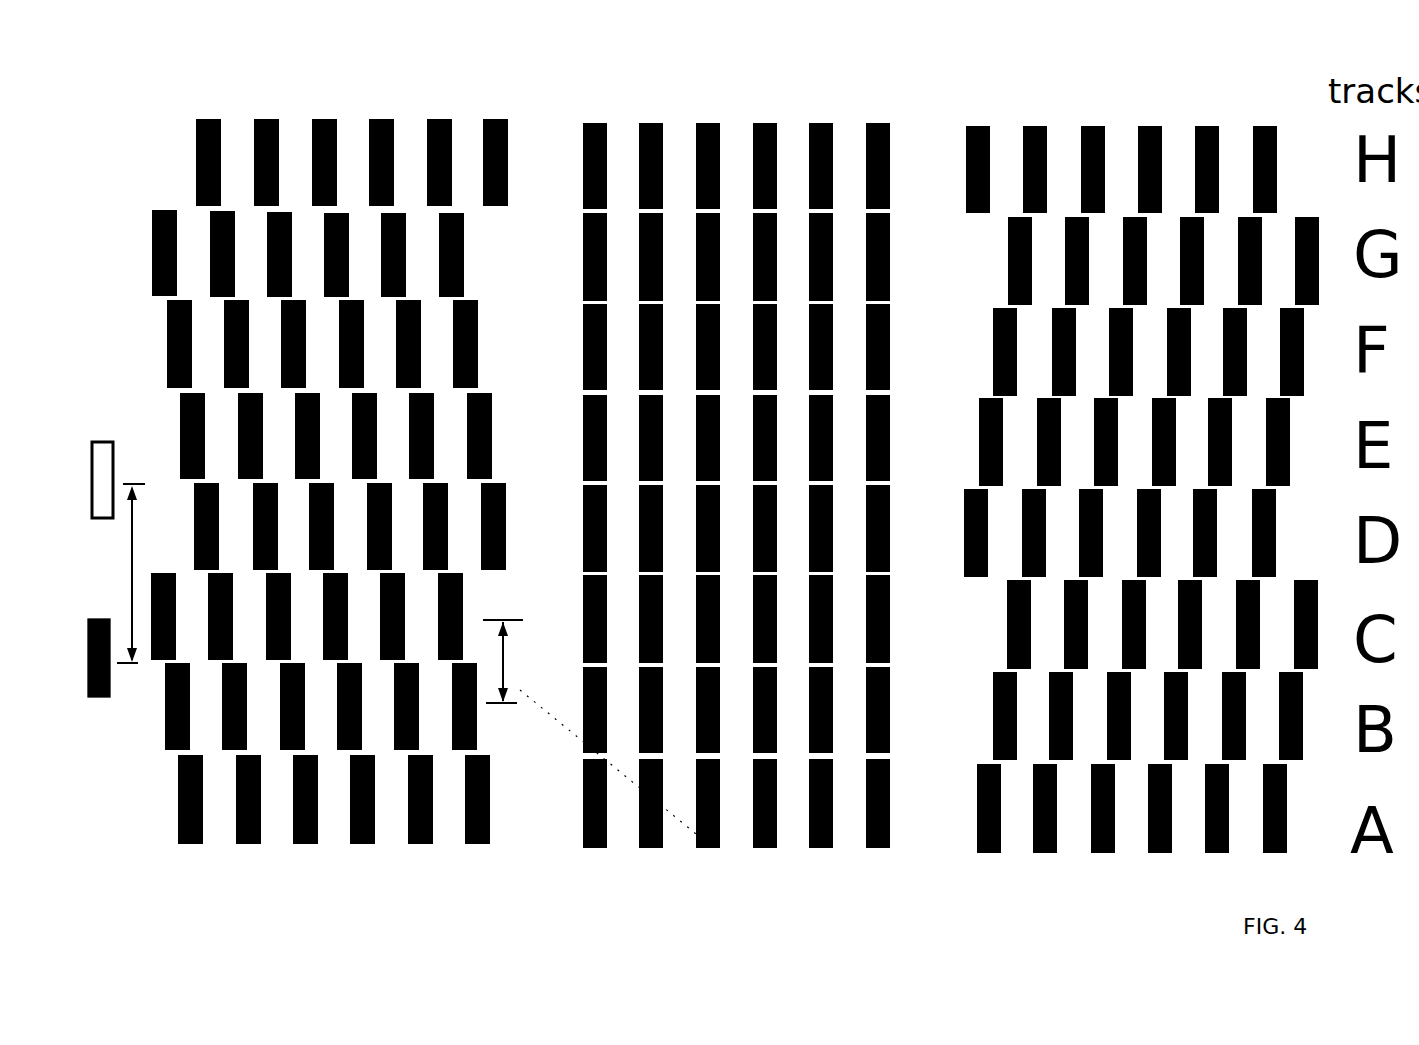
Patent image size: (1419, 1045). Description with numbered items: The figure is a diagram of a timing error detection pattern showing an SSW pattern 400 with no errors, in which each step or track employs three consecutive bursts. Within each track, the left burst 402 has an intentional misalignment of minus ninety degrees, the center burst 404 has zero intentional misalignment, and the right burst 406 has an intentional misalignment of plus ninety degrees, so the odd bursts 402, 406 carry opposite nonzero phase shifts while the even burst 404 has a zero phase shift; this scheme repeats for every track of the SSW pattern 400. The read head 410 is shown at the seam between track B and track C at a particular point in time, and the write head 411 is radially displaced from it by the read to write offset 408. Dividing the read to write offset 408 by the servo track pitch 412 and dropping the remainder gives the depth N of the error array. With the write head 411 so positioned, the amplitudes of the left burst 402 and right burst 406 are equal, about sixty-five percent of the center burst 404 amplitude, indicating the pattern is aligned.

The SSW pattern 400 is at (205, 64).
The left burst 402 is at (342, 863).
The center burst 404 is at (753, 875).
The right burst 406 is at (1123, 871).
The read to write offset 408 is at (132, 552).
The read head 410 is at (105, 698).
The write head 411 is at (100, 440).
The servo track pitch 412 is at (507, 652).